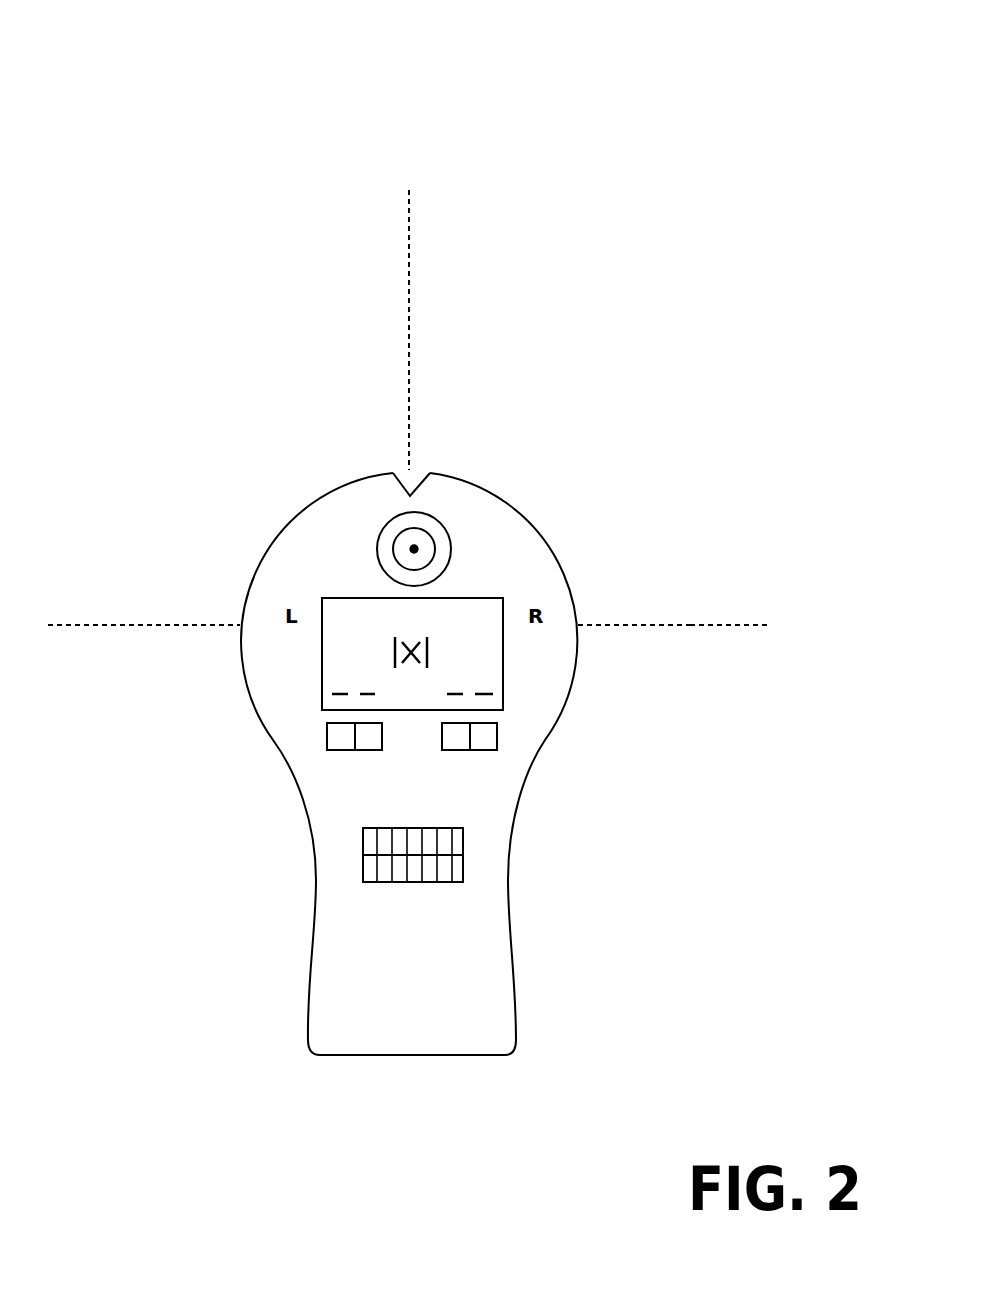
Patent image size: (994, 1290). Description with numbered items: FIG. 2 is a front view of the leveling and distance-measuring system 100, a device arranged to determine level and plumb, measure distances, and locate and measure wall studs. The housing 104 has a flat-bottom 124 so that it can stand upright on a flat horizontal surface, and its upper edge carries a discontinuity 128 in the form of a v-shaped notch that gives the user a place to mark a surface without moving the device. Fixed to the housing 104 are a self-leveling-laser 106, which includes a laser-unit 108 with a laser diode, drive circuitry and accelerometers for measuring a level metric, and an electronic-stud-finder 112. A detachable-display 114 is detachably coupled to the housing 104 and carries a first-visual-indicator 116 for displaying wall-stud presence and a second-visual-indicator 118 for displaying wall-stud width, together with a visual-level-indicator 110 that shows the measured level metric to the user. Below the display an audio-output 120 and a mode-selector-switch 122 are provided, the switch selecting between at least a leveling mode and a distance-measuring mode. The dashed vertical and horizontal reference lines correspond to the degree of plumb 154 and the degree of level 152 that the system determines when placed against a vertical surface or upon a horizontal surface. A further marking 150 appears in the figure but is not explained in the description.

The leveling and distance-measuring system 100 is at (559, 98).
The reference coordinate system 150 is at (601, 136).
The degree of level 152 is at (760, 626).
The degree of plumb 154 is at (413, 323).
The housing 104 is at (562, 560).
The self-leveling-laser 106 is at (657, 619).
The laser-unit 108 is at (175, 620).
The visual-level-indicator 110 is at (490, 687).
The electronic-stud-finder 112 is at (426, 632).
The detachable-display 114 is at (352, 594).
The first-visual-indicator 116 is at (345, 659).
The second-visual-indicator 118 is at (480, 631).
The audio-output 120 is at (361, 843).
The mode-selector-switch 122 is at (494, 741).
The flat-bottom 124 is at (393, 1060).
The discontinuity 128 is at (417, 470).